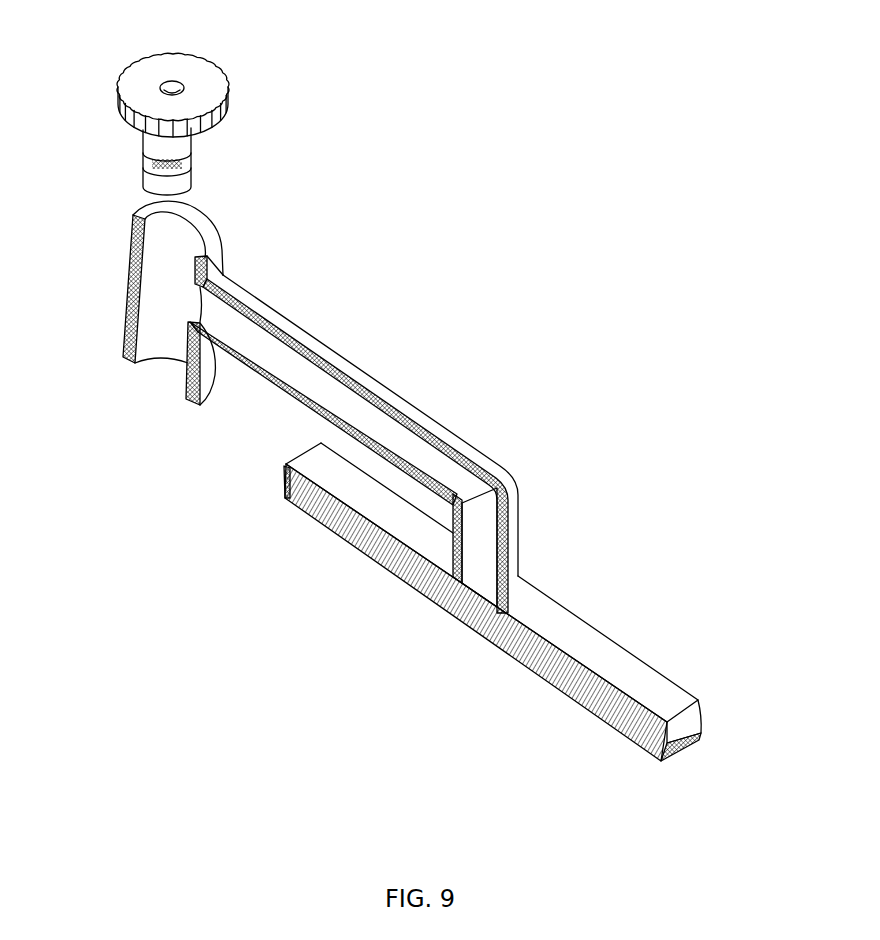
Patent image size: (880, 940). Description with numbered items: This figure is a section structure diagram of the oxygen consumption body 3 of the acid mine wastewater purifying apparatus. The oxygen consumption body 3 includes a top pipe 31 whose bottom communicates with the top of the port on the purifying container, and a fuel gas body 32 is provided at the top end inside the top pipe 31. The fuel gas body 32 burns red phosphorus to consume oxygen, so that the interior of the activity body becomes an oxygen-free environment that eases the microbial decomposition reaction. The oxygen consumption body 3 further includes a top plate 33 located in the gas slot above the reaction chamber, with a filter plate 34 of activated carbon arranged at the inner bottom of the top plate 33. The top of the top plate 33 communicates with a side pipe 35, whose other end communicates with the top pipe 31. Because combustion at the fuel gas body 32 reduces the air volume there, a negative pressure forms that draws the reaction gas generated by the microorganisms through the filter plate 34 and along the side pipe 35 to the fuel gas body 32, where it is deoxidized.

The oxygen consumption body 3 is at (401, 341).
The top pipe 31 is at (125, 313).
The fuel gas body 32 is at (215, 63).
The top plate 33 is at (697, 693).
The filter plate 34 is at (703, 716).
The side pipe 35 is at (517, 481).